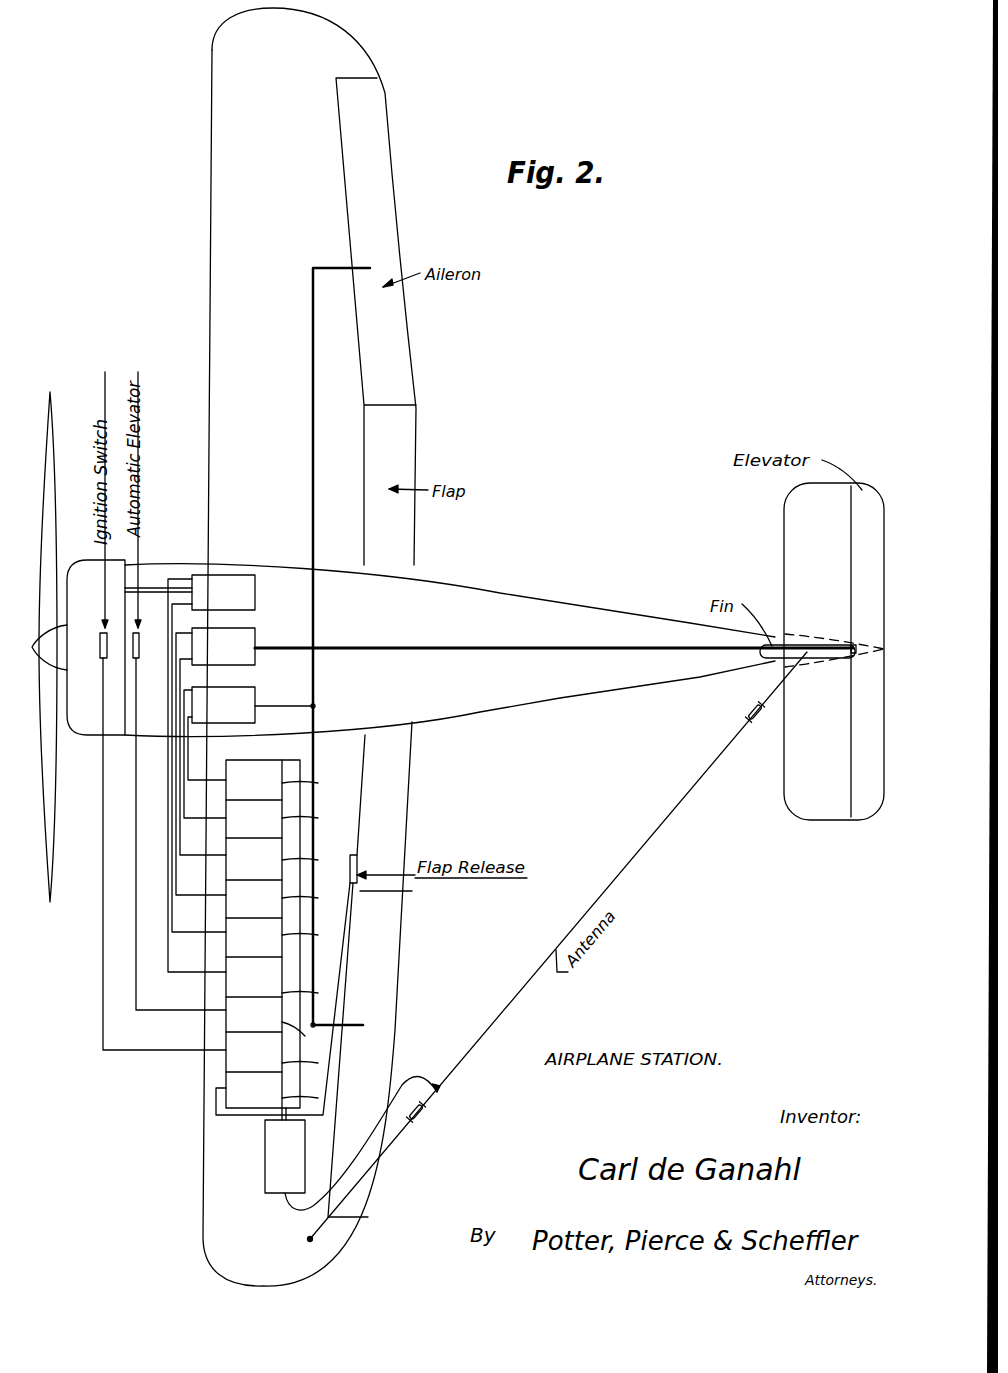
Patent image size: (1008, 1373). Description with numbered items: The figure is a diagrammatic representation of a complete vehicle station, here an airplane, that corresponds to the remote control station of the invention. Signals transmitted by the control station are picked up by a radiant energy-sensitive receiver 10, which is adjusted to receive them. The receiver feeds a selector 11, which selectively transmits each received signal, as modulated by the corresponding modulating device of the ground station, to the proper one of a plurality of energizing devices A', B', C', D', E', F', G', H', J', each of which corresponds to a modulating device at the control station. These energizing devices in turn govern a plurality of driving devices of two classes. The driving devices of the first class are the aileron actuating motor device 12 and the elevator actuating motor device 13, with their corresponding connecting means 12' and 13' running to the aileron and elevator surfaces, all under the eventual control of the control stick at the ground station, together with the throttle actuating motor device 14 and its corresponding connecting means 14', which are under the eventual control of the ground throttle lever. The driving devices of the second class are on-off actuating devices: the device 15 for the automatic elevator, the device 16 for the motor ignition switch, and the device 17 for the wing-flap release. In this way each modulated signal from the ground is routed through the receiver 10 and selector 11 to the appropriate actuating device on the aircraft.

The radiant energy-sensitive receiver 10 is at (272, 1193).
The selector 11 is at (298, 760).
The aileron actuating motor device 12 is at (240, 699).
The connecting means 12' is at (312, 647).
The elevator actuating motor device 13 is at (240, 641).
The connecting means 13' is at (554, 633).
The throttle actuating motor device 14 is at (240, 592).
The connecting means 14' is at (158, 566).
The on-off actuating device for the automatic elevator 15 is at (139, 655).
The on-off actuating device for the motor ignition switch 16 is at (100, 656).
The on-off actuating device for the wing-flap release 17 is at (358, 860).
The energizing device A' is at (310, 785).
The energizing device B' is at (310, 820).
The energizing device C' is at (310, 862).
The energizing device D' is at (311, 900).
The energizing device E' is at (309, 937).
The energizing device F' is at (309, 995).
The energizing device G' is at (303, 1038).
The energizing device H' is at (303, 1074).
The energizing device J' is at (300, 1108).